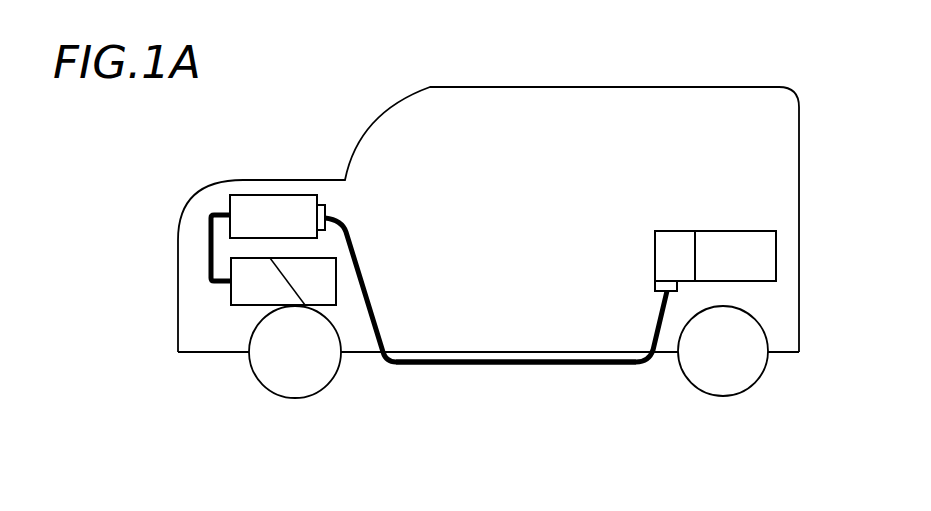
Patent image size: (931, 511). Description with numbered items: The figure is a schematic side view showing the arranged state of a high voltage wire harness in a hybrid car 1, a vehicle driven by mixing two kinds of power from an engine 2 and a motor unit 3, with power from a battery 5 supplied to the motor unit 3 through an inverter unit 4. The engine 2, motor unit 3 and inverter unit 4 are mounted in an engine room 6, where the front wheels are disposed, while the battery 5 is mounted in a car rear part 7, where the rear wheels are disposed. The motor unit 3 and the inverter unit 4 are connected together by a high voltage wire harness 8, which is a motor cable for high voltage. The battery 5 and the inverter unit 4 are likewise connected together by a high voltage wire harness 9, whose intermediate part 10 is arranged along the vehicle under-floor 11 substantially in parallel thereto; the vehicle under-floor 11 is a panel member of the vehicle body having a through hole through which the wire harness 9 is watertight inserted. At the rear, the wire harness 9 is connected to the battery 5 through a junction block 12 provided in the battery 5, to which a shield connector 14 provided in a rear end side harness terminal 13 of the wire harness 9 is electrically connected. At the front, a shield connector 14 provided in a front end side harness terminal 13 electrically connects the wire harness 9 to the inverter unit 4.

The hybrid car 1 is at (541, 86).
The engine 2 is at (325, 288).
The motor unit 3 is at (252, 293).
The inverter unit 4 is at (262, 215).
The battery 5 is at (742, 231).
The engine room 6 is at (193, 325).
The car rear part 7 is at (780, 317).
The high voltage wire harness 8 is at (207, 255).
The high voltage wire harness 9 is at (418, 366).
The intermediate part 10 is at (528, 366).
The vehicle under-floor 11 is at (588, 366).
The junction block 12 is at (678, 231).
The harness terminal 13 is at (343, 222).
The shield connector 14 is at (330, 205).